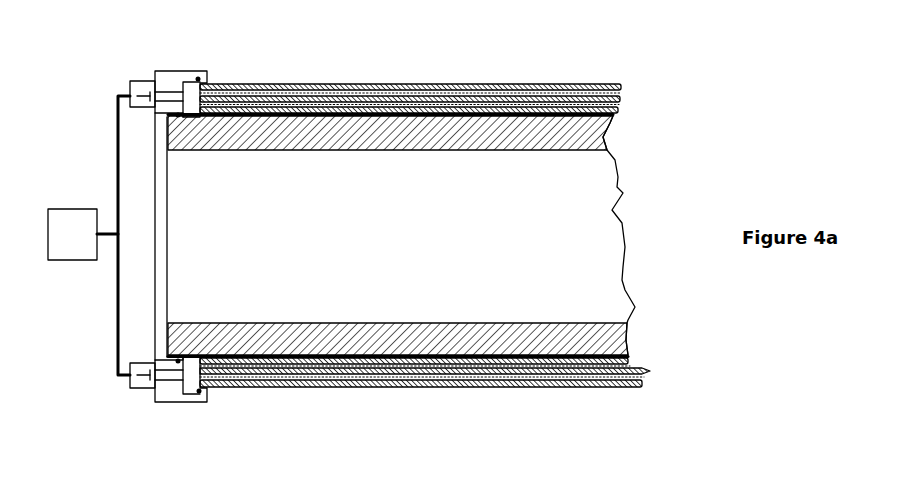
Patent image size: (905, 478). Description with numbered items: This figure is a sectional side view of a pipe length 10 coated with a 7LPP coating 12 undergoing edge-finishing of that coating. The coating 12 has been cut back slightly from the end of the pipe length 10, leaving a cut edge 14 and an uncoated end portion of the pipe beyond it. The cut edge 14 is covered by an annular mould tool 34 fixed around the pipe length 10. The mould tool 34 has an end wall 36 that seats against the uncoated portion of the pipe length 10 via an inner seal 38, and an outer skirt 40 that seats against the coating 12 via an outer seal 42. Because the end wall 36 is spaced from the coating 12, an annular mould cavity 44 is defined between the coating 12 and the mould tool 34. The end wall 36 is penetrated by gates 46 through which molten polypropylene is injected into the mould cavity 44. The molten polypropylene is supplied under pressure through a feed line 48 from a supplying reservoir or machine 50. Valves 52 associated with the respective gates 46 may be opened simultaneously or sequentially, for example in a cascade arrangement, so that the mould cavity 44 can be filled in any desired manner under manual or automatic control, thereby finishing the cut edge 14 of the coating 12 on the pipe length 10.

The pipe length 10 is at (610, 277).
The 7LPP coating 12 is at (530, 87).
The cut edge 14 is at (199, 99).
The annular mould tool 34 is at (135, 410).
The end wall 36 is at (162, 108).
The inner seal 38 is at (179, 118).
The outer skirt 40 is at (188, 398).
The outer seal 42 is at (200, 393).
The annular mould cavity 44 is at (193, 362).
The gates 46 is at (167, 96).
The feed line 48 is at (118, 298).
The supplying reservoir or machine 50 is at (67, 247).
The valves 52 is at (145, 95).